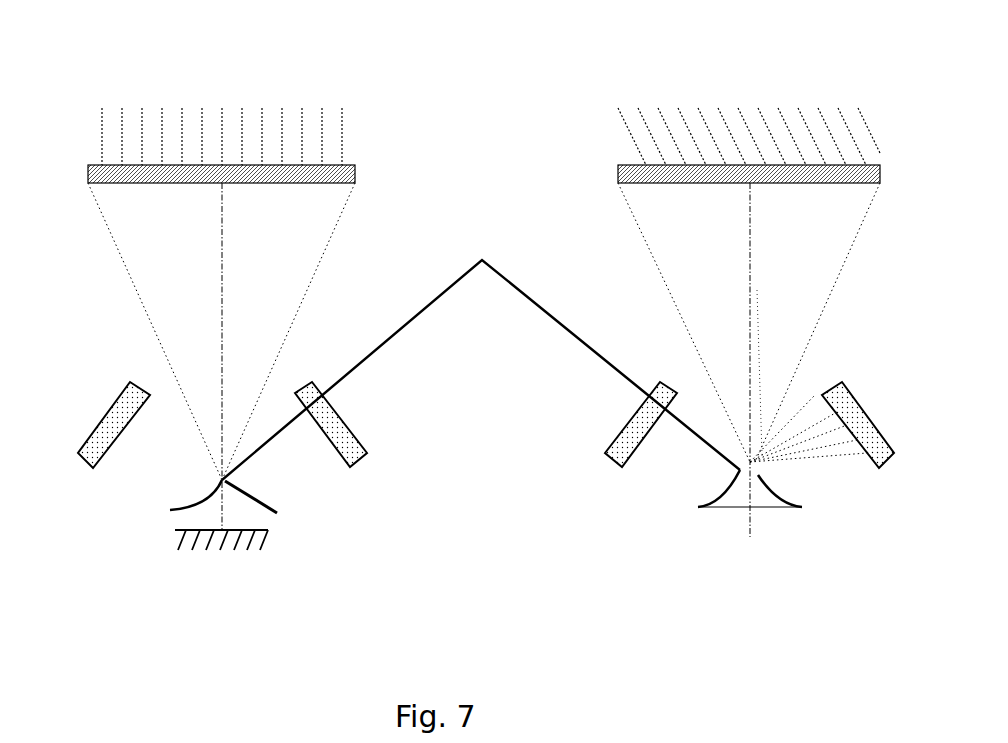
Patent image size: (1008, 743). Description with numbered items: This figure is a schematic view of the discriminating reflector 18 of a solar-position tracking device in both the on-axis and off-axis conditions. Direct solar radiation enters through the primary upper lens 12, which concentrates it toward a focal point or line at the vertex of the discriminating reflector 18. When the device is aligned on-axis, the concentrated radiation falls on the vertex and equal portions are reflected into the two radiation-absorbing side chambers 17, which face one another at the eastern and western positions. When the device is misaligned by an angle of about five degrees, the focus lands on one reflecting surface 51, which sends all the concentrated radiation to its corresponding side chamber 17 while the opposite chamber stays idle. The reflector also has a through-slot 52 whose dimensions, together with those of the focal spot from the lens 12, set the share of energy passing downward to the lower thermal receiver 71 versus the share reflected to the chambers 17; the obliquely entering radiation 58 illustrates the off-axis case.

The primary upper lens 12 is at (650, 170).
The oblique incident light rays 58 is at (747, 122).
The through-slot 52 is at (481, 354).
The radiation-absorbing side chamber 17 is at (627, 433).
The reflecting surface 51 is at (177, 508).
The lower thermal receiver 71 is at (238, 548).
The discriminating reflector 18 is at (742, 507).